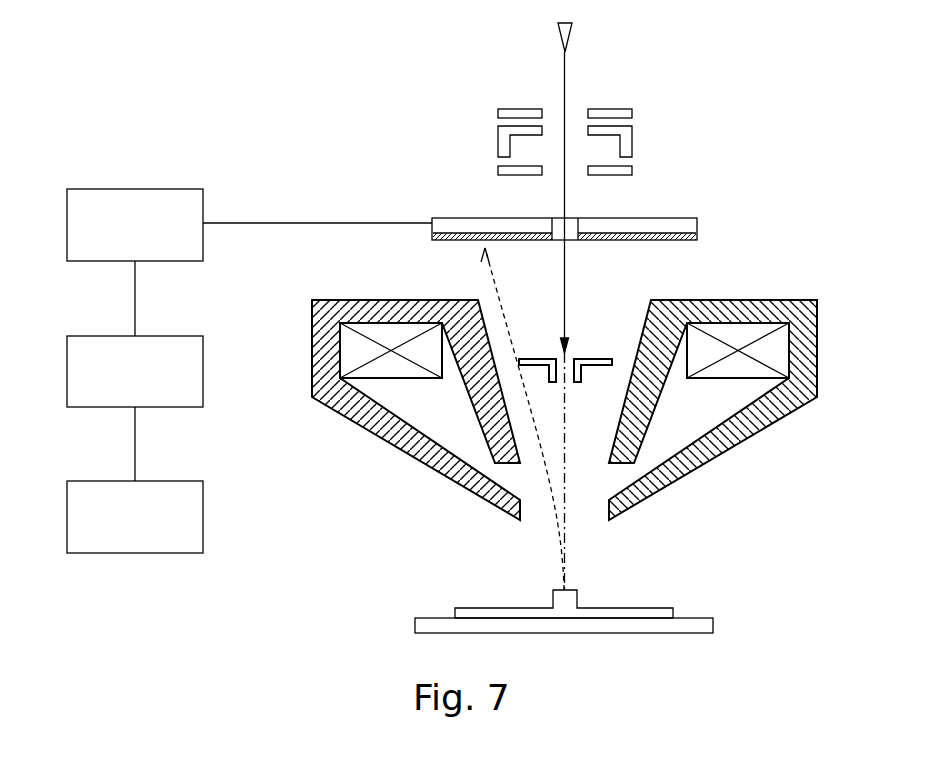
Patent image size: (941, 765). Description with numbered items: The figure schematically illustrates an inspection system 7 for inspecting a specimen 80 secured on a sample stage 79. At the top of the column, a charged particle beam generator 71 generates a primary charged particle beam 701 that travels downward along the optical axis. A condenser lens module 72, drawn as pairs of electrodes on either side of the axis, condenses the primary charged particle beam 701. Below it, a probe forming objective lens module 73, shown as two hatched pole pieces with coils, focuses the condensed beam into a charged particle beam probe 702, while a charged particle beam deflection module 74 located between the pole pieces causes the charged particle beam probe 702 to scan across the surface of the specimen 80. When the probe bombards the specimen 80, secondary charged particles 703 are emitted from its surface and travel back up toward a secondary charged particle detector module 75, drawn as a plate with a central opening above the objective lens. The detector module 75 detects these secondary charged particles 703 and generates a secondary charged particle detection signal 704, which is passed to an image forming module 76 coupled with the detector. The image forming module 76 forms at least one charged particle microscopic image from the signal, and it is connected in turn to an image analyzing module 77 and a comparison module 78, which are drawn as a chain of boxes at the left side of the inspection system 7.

The inspection system 7 is at (116, 84).
The charged particle beam generator 71 is at (647, 23).
The condenser lens module 72 is at (632, 146).
The probe forming objective lens module 73 is at (817, 330).
The charged particle beam deflection module 74 is at (602, 362).
The secondary charged particle detector module 75 is at (697, 223).
The image forming module 76 is at (119, 239).
The image analyzing module 77 is at (119, 384).
The comparison module 78 is at (119, 530).
The sample stage 79 is at (713, 627).
The specimen 80 is at (673, 610).
The primary charged particle beam 701 is at (568, 200).
The charged particle beam probe 702 is at (567, 520).
The secondary charged particles 703 is at (490, 292).
The secondary charged particle detection signal 704 is at (250, 212).